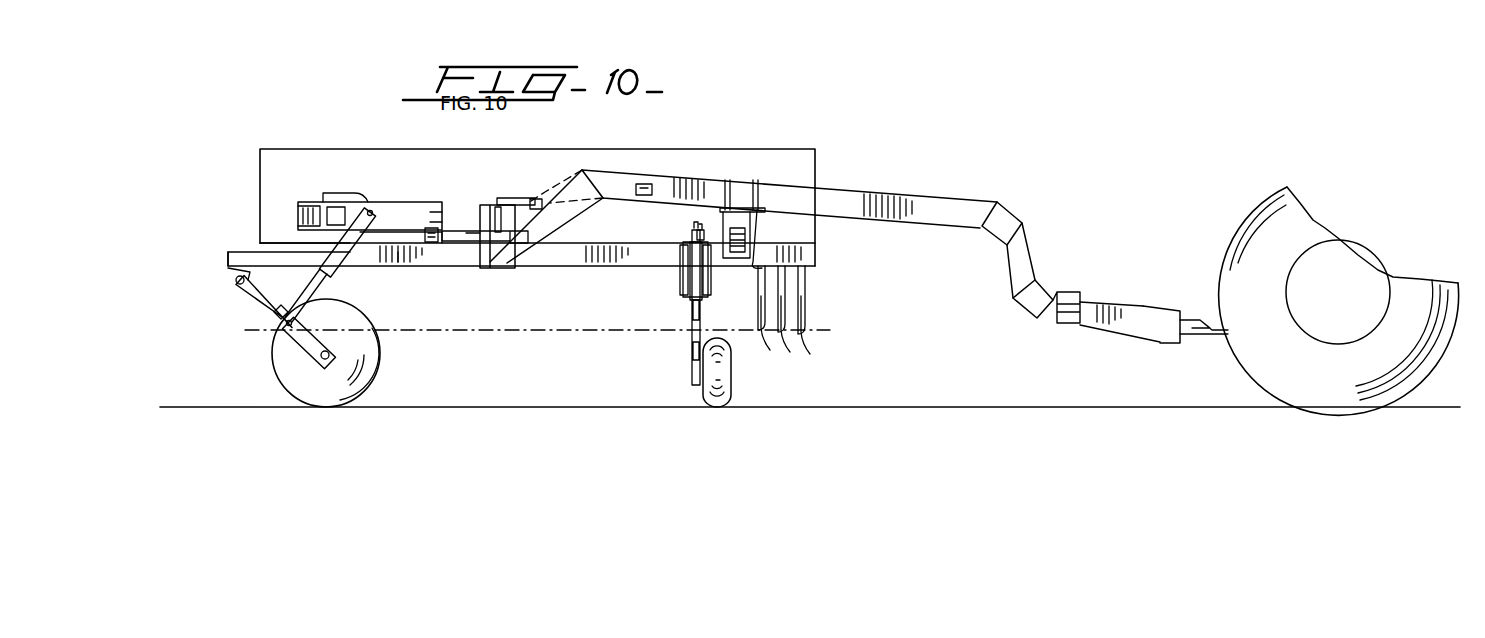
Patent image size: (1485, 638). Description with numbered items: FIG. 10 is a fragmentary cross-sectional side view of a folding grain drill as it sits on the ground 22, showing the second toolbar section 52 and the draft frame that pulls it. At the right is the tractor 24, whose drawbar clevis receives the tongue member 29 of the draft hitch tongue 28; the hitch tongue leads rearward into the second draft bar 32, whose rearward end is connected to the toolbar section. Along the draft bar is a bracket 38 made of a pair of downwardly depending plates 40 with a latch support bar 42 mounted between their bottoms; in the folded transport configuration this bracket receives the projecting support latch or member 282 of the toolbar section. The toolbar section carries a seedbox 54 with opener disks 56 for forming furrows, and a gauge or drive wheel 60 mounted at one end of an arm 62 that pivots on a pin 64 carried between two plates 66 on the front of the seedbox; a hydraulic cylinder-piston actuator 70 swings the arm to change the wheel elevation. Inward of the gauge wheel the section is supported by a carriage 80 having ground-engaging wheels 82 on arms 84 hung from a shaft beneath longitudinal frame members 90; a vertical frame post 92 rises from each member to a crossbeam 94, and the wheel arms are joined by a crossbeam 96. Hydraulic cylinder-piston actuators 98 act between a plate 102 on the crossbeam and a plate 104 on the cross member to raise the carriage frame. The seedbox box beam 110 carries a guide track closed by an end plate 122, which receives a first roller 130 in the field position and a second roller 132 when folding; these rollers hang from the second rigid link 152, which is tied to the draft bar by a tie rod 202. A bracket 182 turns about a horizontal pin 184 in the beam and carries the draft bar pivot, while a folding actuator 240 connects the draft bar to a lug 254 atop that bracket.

The ground 22 is at (183, 406).
The tractor 24 is at (1240, 216).
The draft hitch tongue 28 is at (1103, 292).
The tongue member 29 is at (1183, 340).
The second draft bar 32 is at (845, 190).
The bracket 38 is at (772, 216).
The plates 40 is at (721, 232).
The latch support bar 42 is at (765, 262).
The second toolbar section 52 is at (806, 140).
The seedbox 54 is at (800, 175).
The opener disks 56 is at (790, 340).
The gauge or drive wheel 60 is at (727, 374).
The arm 62 is at (690, 368).
The pin 64 is at (712, 295).
The plates 66 is at (686, 283).
The hydraulic cylinder-piston actuator 70 is at (688, 270).
The carriage 80 is at (218, 257).
The ground-engaging wheels 82 is at (355, 390).
The arm 84 is at (312, 342).
The longitudinal frame members 90 is at (247, 252).
The vertical frame post 92 is at (305, 268).
The crossbeam 94 is at (336, 210).
The crossbeam 96 is at (275, 301).
The hydraulic cylinder-piston actuators 98 is at (345, 282).
The plate 102 is at (352, 195).
The plate 104 is at (278, 316).
The box beam 110 is at (551, 256).
The end plate 122 is at (446, 228).
The first roller 130 is at (432, 244).
The second roller 132 is at (400, 262).
The second rigid link 152 is at (287, 218).
The bracket 182 is at (510, 276).
The pin 184 is at (497, 215).
The tie rod 202 is at (469, 232).
The hydraulic cylinder-piston actuators 240 is at (613, 183).
The lug 254 is at (527, 200).
The support latch or member 282 is at (722, 210).